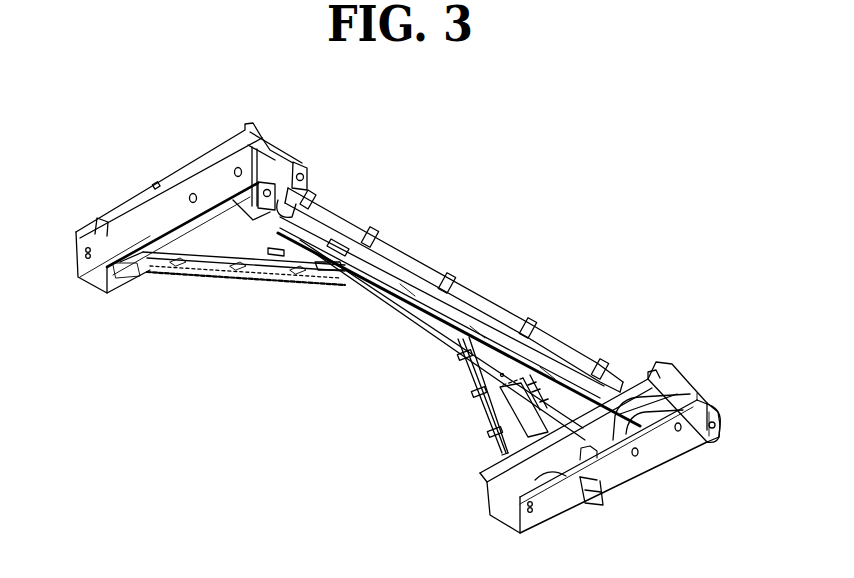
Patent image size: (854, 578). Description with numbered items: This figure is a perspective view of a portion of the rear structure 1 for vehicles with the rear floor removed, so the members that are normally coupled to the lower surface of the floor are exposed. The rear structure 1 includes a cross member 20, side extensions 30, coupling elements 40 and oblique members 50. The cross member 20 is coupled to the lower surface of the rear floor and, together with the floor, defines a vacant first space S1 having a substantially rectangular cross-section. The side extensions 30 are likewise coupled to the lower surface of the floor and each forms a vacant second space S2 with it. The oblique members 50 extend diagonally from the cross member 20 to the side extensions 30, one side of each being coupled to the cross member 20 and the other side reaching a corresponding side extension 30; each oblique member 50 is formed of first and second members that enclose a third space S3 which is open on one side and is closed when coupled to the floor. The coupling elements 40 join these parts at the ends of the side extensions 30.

The rear structure 1 is at (512, 272).
The cross member 20 is at (417, 253).
The side extension 30 is at (145, 190).
The coupling element 40 is at (290, 172).
The oblique member 50 is at (207, 271).
The first space S1 is at (337, 246).
The second space S2 is at (590, 454).
The third space S3 is at (277, 254).